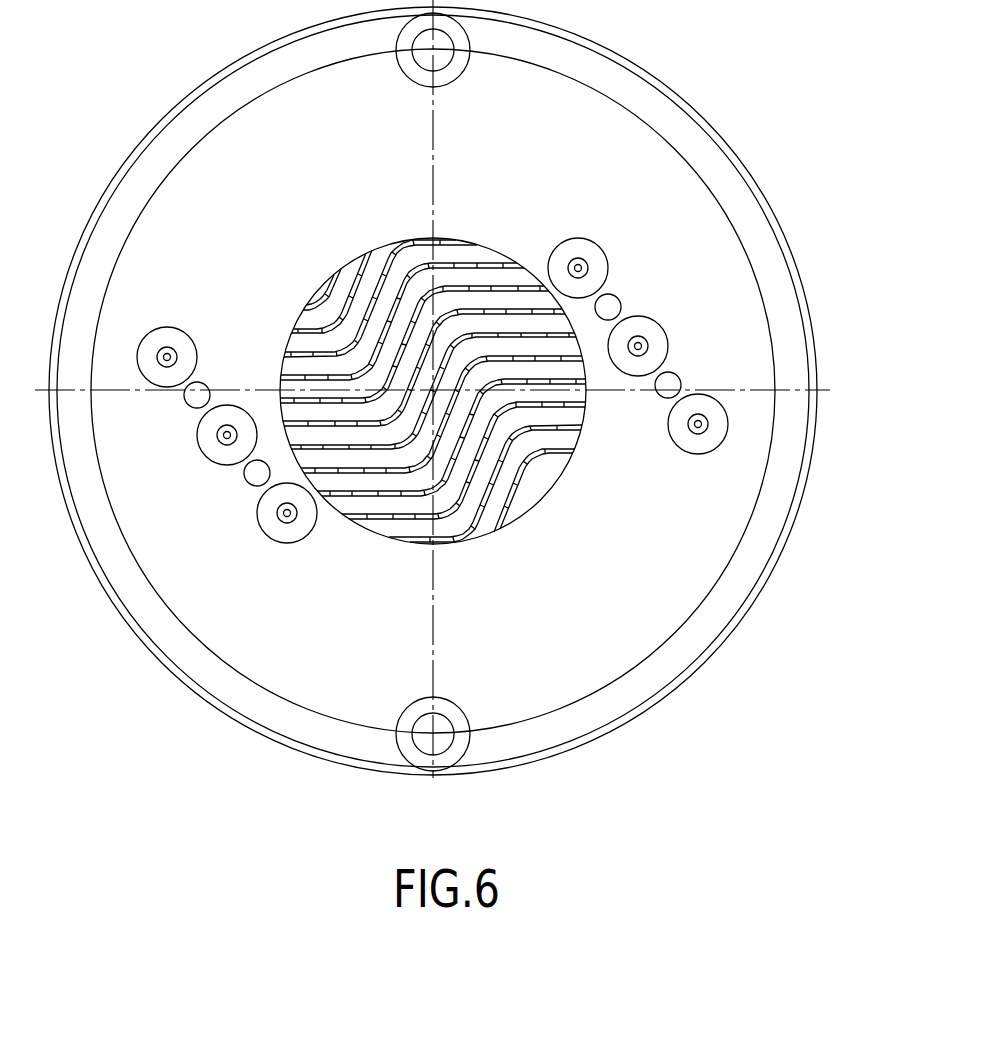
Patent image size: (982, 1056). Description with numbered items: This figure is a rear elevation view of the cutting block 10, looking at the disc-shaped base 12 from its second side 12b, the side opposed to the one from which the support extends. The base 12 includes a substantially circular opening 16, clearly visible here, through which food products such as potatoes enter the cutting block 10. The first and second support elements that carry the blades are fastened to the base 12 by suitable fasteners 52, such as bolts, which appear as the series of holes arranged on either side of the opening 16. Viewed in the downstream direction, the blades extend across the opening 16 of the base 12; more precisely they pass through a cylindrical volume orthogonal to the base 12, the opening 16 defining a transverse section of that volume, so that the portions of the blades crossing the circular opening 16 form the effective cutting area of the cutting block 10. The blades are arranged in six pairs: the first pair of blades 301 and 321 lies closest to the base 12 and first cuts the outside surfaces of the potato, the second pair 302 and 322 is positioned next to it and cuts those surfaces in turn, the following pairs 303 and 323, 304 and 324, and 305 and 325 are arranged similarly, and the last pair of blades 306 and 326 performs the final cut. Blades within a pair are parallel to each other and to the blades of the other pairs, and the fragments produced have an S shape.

The cutting block 10 is at (744, 73).
The base 12 is at (722, 640).
The second side 12b is at (547, 161).
The circular opening 16 is at (287, 340).
The fasteners 52 is at (157, 373).
The first blade of first pair 301 is at (326, 288).
The first blade of second pair 302 is at (352, 290).
The first blade of third pair 303 is at (380, 280).
The first blade of fourth pair 304 is at (407, 290).
The first blade of fifth pair 305 is at (443, 310).
The first blade of sixth pair 306 is at (517, 330).
The second blade of first pair 321 is at (540, 486).
The second blade of second pair 322 is at (555, 450).
The second blade of third pair 323 is at (467, 514).
The second blade of fourth pair 324 is at (435, 494).
The second blade of fifth pair 325 is at (392, 472).
The second blade of sixth pair 326 is at (353, 450).